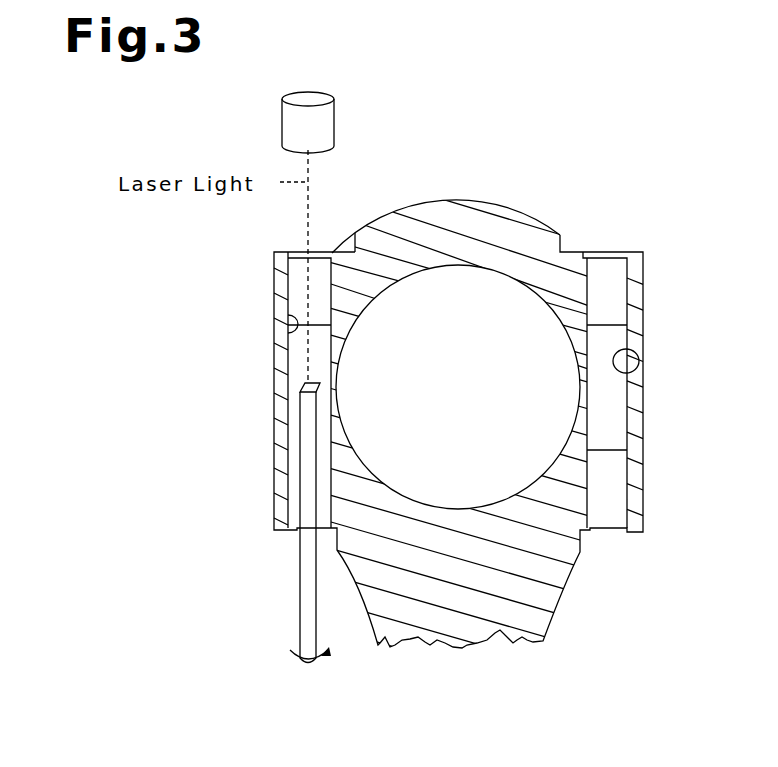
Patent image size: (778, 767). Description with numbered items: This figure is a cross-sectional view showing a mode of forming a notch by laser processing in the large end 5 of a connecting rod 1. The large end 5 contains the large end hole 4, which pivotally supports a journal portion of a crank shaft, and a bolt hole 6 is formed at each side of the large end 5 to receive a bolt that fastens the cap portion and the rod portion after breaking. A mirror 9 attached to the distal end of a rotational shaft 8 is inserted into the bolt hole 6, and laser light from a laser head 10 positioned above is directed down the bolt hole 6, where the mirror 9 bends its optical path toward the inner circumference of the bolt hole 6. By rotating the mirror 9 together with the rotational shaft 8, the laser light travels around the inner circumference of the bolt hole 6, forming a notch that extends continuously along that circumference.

The connecting rod 1 is at (460, 438).
The large end hole 4 is at (537, 293).
The large end 5 is at (508, 207).
The bolt hole 6 is at (288, 324).
The rotational shaft 8 is at (300, 562).
The mirror 9 is at (288, 387).
The laser head 10 is at (334, 126).